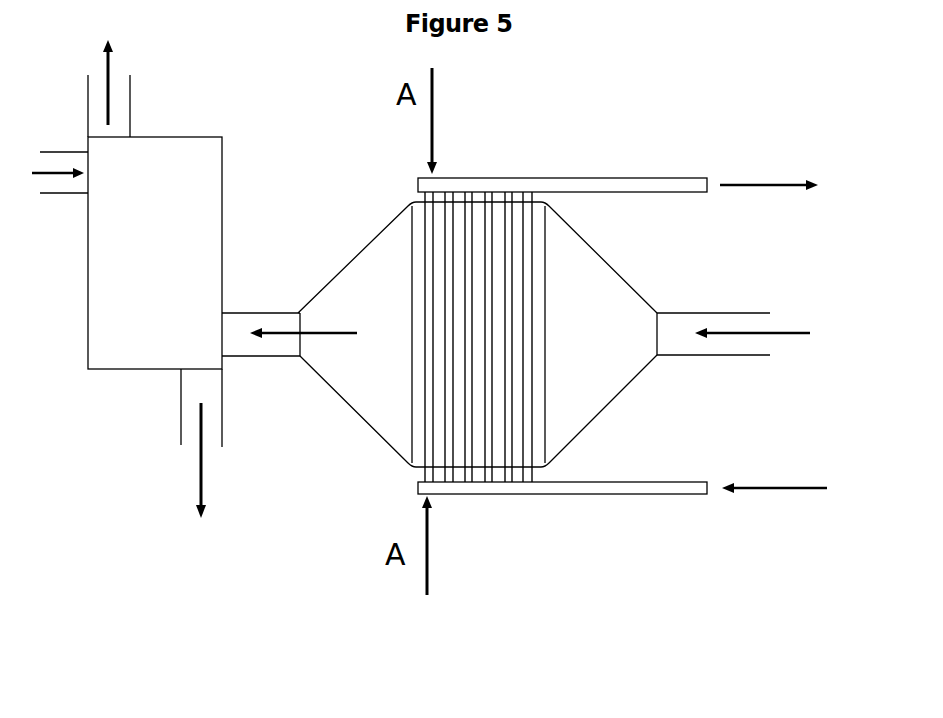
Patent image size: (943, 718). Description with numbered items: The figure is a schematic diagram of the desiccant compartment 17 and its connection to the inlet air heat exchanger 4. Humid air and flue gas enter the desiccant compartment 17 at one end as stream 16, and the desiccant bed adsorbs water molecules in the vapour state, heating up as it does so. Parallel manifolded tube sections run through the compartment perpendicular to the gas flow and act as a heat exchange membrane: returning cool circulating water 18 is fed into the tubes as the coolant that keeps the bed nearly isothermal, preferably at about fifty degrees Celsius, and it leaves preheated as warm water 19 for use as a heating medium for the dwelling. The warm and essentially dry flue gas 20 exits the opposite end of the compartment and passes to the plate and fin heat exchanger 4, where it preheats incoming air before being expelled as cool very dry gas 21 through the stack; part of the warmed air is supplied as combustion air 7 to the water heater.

The plate and fin heat exchanger 4 is at (127, 261).
The combustion air 7 is at (201, 483).
The hot fluid inlet stream 16 is at (752, 334).
The desiccant compartment 17 is at (473, 347).
The returning cool circulating water 18 is at (774, 470).
The warm water 19 is at (769, 167).
The warm dry flue gas 20 is at (289, 331).
The cool very dry gas 21 is at (93, 72).